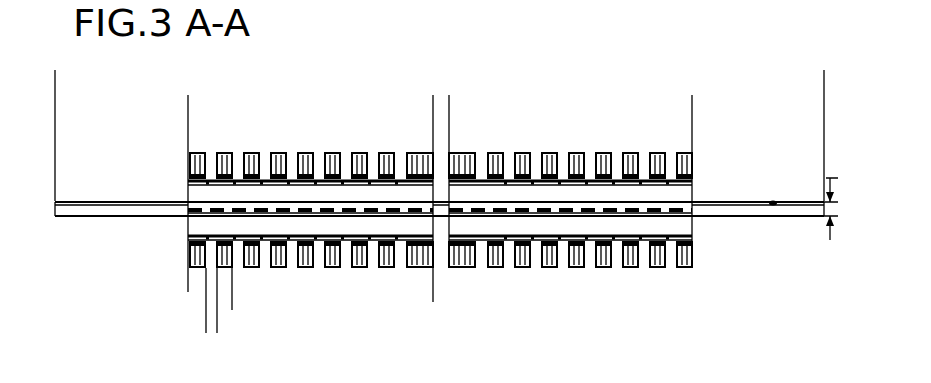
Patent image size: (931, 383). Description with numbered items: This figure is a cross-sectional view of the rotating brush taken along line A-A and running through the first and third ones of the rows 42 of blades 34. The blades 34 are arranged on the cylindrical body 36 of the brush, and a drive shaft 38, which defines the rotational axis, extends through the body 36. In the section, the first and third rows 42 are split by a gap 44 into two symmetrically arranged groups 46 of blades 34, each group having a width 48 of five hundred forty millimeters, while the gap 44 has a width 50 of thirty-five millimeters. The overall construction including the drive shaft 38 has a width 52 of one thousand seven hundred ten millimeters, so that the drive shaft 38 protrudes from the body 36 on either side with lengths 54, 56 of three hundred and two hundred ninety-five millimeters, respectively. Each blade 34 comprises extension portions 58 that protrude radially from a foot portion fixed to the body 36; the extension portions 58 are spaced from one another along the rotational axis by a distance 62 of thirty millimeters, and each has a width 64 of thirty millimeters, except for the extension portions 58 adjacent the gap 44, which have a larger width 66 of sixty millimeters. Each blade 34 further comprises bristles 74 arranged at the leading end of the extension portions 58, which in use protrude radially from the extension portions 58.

The blades 34 is at (484, 225).
The rows 42 is at (484, 225).
The cylindrical body 36 is at (188, 227).
The drive shaft 38 is at (88, 217).
The gap 44 is at (442, 263).
The groups of blades 46 is at (316, 280).
The width of groups 48 is at (433, 102).
The width of gap 50 is at (418, 127).
The width of overall construction 52 is at (824, 77).
The length of drive shaft protrusion 54 is at (55, 102).
The length of drive shaft protrusion 56 is at (824, 102).
The extension portions 58 is at (188, 253).
The distance between extension portions 62 is at (240, 332).
The width of extension portions 64 is at (188, 292).
The width of extension portions adjacent the gap 66 is at (407, 268).
The bristles 74 is at (685, 268).